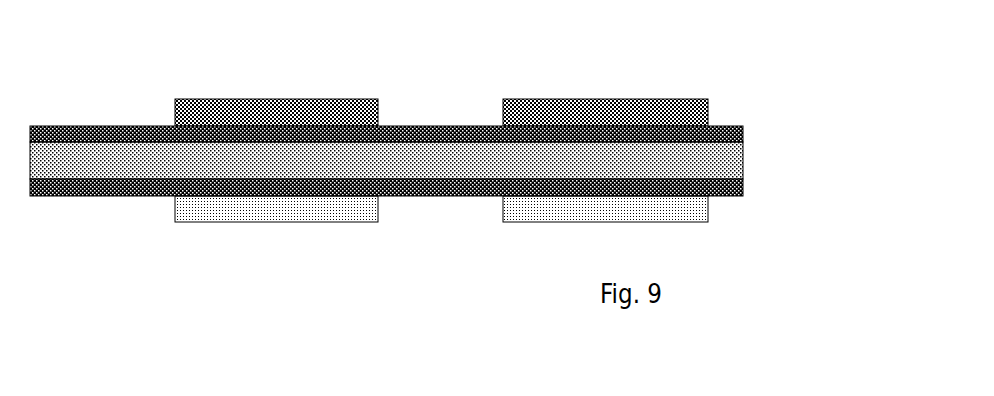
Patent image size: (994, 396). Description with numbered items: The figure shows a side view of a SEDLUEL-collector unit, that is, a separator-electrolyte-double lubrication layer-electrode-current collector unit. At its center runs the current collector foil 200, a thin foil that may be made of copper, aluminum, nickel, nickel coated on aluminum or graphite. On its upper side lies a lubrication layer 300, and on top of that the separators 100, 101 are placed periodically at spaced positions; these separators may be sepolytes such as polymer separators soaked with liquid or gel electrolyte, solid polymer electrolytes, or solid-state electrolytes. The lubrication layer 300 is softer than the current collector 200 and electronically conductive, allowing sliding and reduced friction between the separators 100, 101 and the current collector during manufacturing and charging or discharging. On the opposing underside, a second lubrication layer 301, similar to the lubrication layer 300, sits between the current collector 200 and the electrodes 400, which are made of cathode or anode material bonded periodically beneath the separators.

The separator 100 is at (308, 85).
The separator 101 is at (585, 86).
The current collector foil 200 is at (752, 160).
The lubrication layer 300 is at (748, 132).
The second lubrication layer 301 is at (748, 183).
The electrode 400 is at (713, 208).